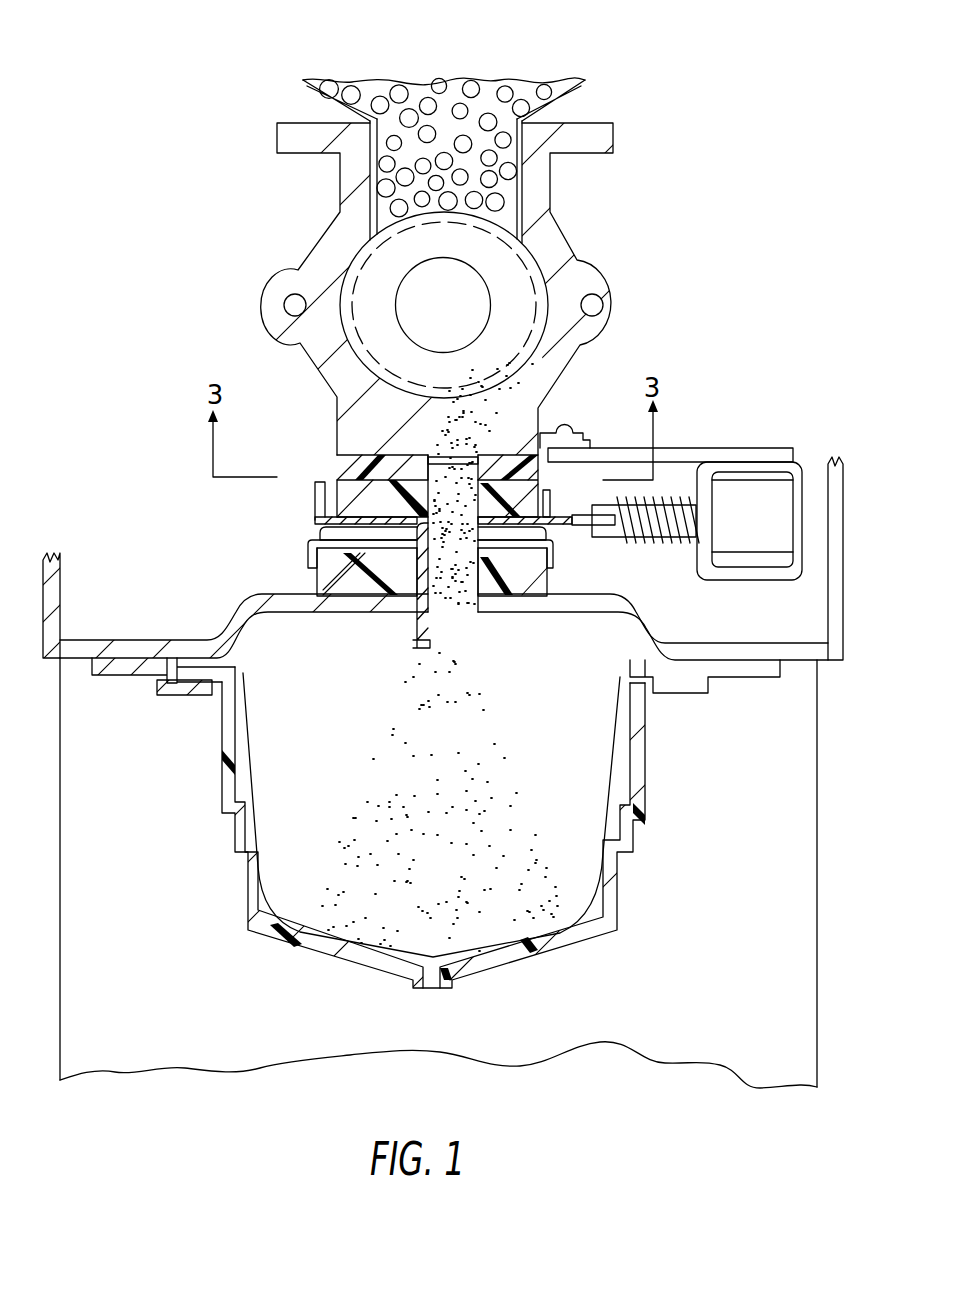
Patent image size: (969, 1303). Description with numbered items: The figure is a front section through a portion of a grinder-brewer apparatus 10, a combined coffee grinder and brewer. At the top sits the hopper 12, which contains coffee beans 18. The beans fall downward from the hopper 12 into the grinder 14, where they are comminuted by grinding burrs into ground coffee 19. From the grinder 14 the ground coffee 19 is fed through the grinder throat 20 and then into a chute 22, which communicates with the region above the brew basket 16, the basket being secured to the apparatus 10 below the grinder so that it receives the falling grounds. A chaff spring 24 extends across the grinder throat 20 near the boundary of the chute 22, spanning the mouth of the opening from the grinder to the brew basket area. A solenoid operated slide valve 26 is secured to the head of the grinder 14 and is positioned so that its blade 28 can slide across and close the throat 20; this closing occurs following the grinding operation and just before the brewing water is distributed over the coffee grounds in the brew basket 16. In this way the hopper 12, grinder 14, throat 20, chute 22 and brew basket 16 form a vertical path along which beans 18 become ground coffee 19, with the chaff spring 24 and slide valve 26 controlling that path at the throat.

The grinder-brewer apparatus 10 is at (726, 264).
The hopper 12 is at (586, 84).
The grinder 14 is at (572, 241).
The brew basket 16 is at (645, 797).
The coffee beans 18 is at (462, 103).
The ground coffee 19 is at (480, 410).
The grinder throat 20 is at (445, 428).
The chute 22 is at (440, 493).
The chaff spring 24 is at (465, 438).
The solenoid operated slide valve 26 is at (805, 512).
The blade 28 is at (558, 527).